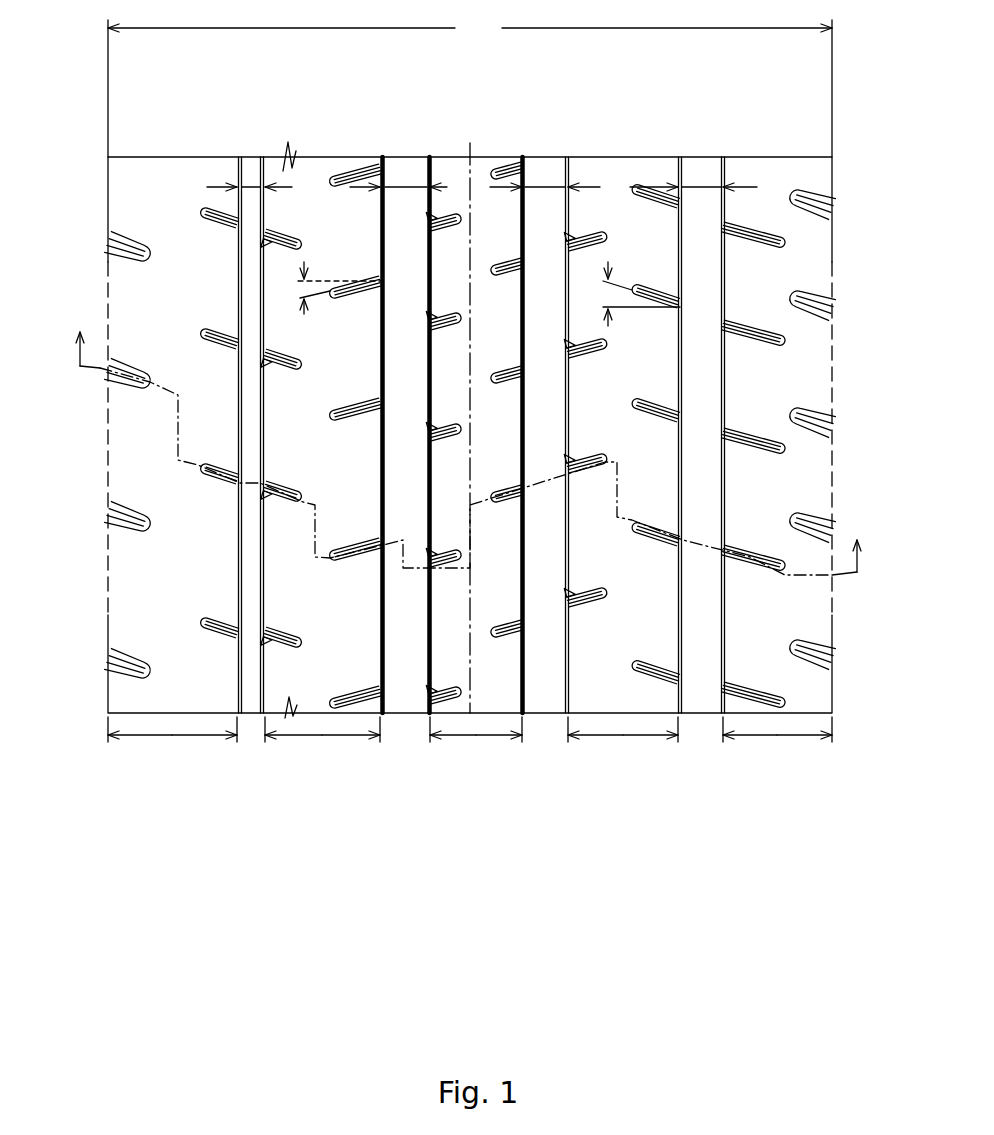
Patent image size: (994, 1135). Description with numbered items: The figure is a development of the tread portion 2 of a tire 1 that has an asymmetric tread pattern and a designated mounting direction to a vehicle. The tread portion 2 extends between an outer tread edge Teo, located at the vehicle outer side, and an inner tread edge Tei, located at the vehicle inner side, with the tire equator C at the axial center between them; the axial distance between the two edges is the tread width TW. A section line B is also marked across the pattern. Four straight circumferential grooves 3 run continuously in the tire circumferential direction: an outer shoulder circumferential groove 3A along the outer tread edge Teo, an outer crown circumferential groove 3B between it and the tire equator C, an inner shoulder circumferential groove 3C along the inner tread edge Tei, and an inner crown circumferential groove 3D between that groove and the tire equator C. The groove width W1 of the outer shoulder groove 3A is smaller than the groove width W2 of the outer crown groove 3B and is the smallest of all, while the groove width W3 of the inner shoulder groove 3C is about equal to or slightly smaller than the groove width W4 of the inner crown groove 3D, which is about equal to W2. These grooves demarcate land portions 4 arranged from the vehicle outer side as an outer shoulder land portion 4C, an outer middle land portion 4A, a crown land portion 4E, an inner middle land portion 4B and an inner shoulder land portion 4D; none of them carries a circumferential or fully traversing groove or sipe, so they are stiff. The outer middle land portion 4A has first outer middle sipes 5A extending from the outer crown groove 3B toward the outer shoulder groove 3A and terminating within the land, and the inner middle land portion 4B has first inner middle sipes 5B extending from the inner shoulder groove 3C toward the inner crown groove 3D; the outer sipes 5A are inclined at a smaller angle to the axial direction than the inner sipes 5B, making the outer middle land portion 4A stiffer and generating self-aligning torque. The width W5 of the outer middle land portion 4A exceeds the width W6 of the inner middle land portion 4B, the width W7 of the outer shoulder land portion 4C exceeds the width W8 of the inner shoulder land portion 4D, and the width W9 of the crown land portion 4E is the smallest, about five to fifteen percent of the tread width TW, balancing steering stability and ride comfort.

The tire 1 is at (848, 92).
The tread portion 2 is at (750, 98).
The circumferential grooves 3 is at (712, 92).
The outer shoulder circumferential groove 3A is at (251, 170).
The outer crown circumferential groove 3B is at (409, 168).
The inner shoulder circumferential groove 3C is at (692, 168).
The inner crown circumferential groove 3D is at (534, 168).
The land portions 4 is at (235, 812).
The outer middle land portion 4A is at (352, 645).
The inner middle land portion 4B is at (590, 660).
The outer shoulder land portion 4C is at (205, 665).
The inner shoulder land portion 4D is at (745, 648).
The crown land portion 4E is at (500, 672).
The first outer middle sipes 5A is at (328, 295).
The first inner middle sipes 5B is at (624, 290).
The tread width TW is at (470, 87).
The groove width of outer shoulder circumferential groove W1 is at (248, 185).
The groove width of outer crown circumferential groove W2 is at (405, 185).
The groove width of inner shoulder circumferential groove W3 is at (706, 185).
The groove width of inner crown circumferential groove W4 is at (551, 185).
The width of outer middle land portion W5 is at (322, 742).
The width of inner middle land portion W6 is at (623, 742).
The width of outer shoulder land portion W7 is at (172, 742).
The width of inner shoulder land portion W8 is at (777, 742).
The width of crown land portion W9 is at (476, 742).
The tire equator C is at (470, 415).
The outer tread edge Teo is at (107, 176).
The inner tread edge Tei is at (833, 178).
The section line B- B is at (468, 440).